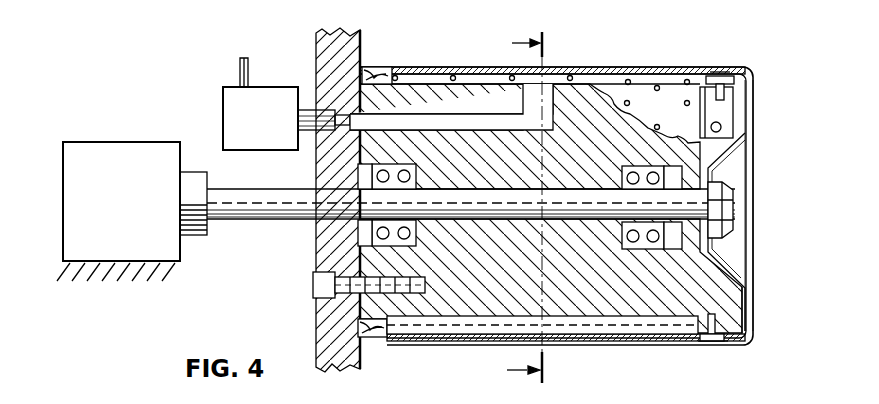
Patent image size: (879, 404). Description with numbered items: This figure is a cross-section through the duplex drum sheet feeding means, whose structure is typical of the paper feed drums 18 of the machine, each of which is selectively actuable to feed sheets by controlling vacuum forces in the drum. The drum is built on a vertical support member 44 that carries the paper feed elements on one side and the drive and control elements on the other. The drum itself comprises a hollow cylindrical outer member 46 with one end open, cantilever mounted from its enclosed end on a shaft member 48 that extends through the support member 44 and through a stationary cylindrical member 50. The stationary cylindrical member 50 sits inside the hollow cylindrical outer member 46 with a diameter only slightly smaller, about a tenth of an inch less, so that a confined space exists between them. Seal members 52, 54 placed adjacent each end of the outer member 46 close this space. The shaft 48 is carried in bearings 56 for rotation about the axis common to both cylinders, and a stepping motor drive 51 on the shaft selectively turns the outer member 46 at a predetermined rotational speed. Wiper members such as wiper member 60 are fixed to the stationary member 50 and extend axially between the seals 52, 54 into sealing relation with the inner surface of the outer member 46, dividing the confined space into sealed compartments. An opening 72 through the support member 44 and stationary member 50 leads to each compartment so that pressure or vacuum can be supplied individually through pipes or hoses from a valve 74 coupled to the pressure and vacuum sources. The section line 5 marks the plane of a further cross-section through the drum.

The section line 5- 5 is at (532, 208).
The paper feed drum 18 is at (664, 63).
The support member 44 is at (316, 333).
The hollow cylindrical outer member 46 is at (620, 70).
The shaft member 48 is at (269, 222).
The stationary cylindrical member 50 is at (717, 301).
The stepping motor drive 51 is at (117, 142).
The seal member 52 is at (739, 70).
The seal member 54 is at (398, 67).
The bearings 56 is at (414, 248).
The wiper member 60 is at (438, 334).
The opening 72 is at (455, 127).
The valve 74 is at (223, 111).